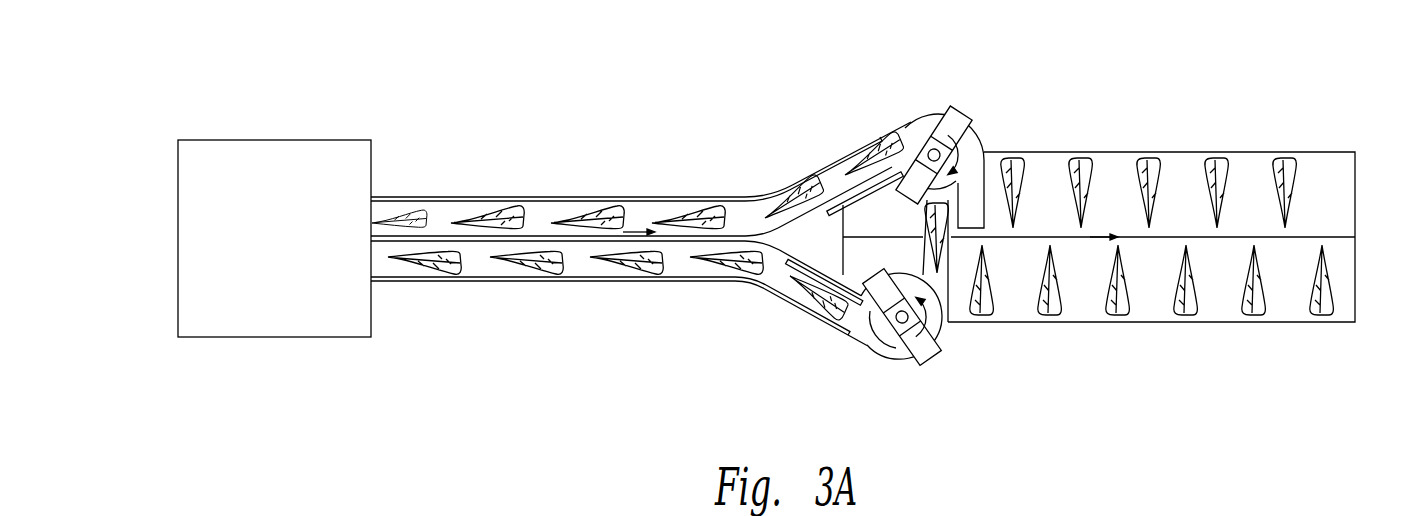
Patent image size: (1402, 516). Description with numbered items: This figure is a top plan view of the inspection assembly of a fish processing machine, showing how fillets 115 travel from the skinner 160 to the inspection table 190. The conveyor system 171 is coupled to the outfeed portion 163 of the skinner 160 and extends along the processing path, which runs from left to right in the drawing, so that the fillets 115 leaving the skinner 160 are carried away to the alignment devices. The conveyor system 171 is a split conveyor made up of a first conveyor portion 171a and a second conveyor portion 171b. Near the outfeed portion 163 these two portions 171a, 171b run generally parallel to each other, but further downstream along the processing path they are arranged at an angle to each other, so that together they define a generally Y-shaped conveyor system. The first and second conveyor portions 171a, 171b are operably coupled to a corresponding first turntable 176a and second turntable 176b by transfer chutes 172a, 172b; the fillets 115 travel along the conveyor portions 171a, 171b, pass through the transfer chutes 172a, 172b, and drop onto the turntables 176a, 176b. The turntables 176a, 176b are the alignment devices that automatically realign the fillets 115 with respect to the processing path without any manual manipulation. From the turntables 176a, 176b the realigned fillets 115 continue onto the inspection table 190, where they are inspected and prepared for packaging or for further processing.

The skinner 160 is at (295, 251).
The outfeed portion 163 is at (378, 193).
The fillets 115 is at (592, 212).
The conveyor system 171 is at (570, 284).
The first conveyor portion 171a is at (781, 192).
The second conveyor portion 171b is at (752, 288).
The first transfer chute 172a is at (889, 134).
The second transfer chute 172b is at (865, 324).
The first turntable 176a is at (938, 104).
The second turntable 176b is at (934, 360).
The inspection table 190 is at (1260, 152).